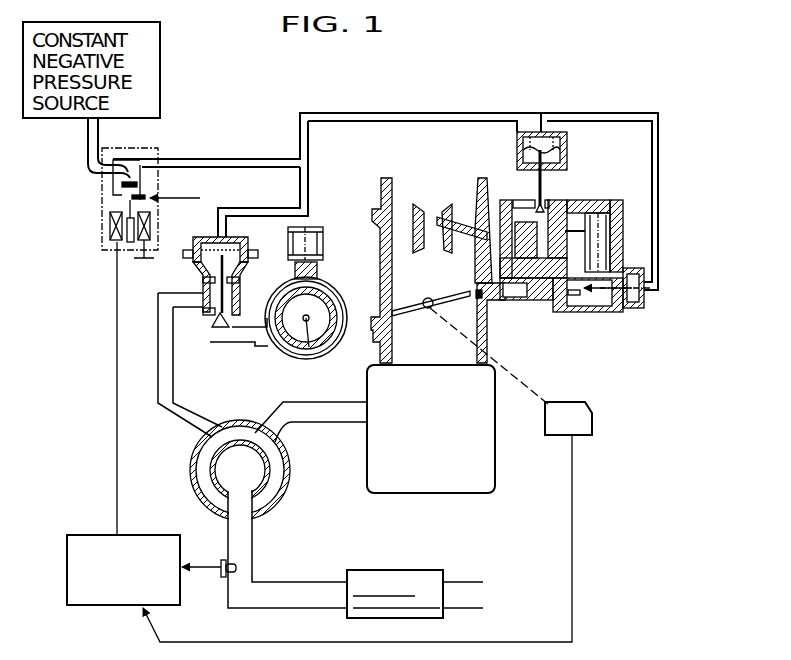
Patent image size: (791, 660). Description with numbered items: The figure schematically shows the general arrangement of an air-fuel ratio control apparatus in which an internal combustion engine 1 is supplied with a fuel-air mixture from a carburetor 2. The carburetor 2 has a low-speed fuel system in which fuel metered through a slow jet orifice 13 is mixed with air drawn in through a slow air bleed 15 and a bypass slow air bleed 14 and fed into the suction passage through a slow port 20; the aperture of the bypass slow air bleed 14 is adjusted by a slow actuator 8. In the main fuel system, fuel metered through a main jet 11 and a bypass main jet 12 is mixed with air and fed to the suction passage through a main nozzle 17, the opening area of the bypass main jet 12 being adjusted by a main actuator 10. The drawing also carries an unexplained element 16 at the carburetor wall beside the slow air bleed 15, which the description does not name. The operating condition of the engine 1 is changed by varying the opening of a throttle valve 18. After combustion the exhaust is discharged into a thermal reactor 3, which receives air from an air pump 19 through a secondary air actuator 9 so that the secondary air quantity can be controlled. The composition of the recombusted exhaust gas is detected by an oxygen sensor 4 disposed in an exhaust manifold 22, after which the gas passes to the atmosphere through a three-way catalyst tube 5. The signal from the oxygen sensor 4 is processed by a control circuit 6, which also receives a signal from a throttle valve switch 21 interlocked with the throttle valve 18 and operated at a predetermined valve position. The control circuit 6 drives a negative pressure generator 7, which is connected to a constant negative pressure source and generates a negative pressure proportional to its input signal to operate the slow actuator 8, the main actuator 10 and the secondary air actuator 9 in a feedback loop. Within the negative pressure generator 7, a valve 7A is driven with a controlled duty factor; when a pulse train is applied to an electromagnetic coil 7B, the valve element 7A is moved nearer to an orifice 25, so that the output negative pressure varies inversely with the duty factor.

The internal combustion engine 1 is at (448, 494).
The carburetor 2 is at (382, 188).
The thermal reactor 3 is at (268, 473).
The oxygen sensor 4 is at (225, 560).
The three-way catalyst tube 5 is at (408, 570).
The control circuit 6 is at (90, 535).
The negative pressure generator 7 is at (118, 190).
The valve 7A is at (117, 188).
The electromagnetic coil 7B is at (150, 220).
The slow actuator 8 is at (522, 118).
The secondary air actuator 9 is at (188, 245).
The main actuator 10 is at (593, 253).
The main jet 11 is at (614, 240).
The bypass main jet 12 is at (568, 300).
The slow jet orifice 13 is at (585, 205).
The bypass slow air bleed 14 is at (548, 201).
The slow air bleed 15 is at (514, 200).
The intake passage wall 16 is at (493, 200).
The main nozzle 17 is at (441, 222).
The throttle valve 18 is at (418, 311).
The air pump 19 is at (338, 295).
The slow port 20 is at (488, 297).
The throttle valve switch 21 is at (591, 417).
The exhaust manifold 22 is at (250, 550).
The orifice 25 is at (127, 170).